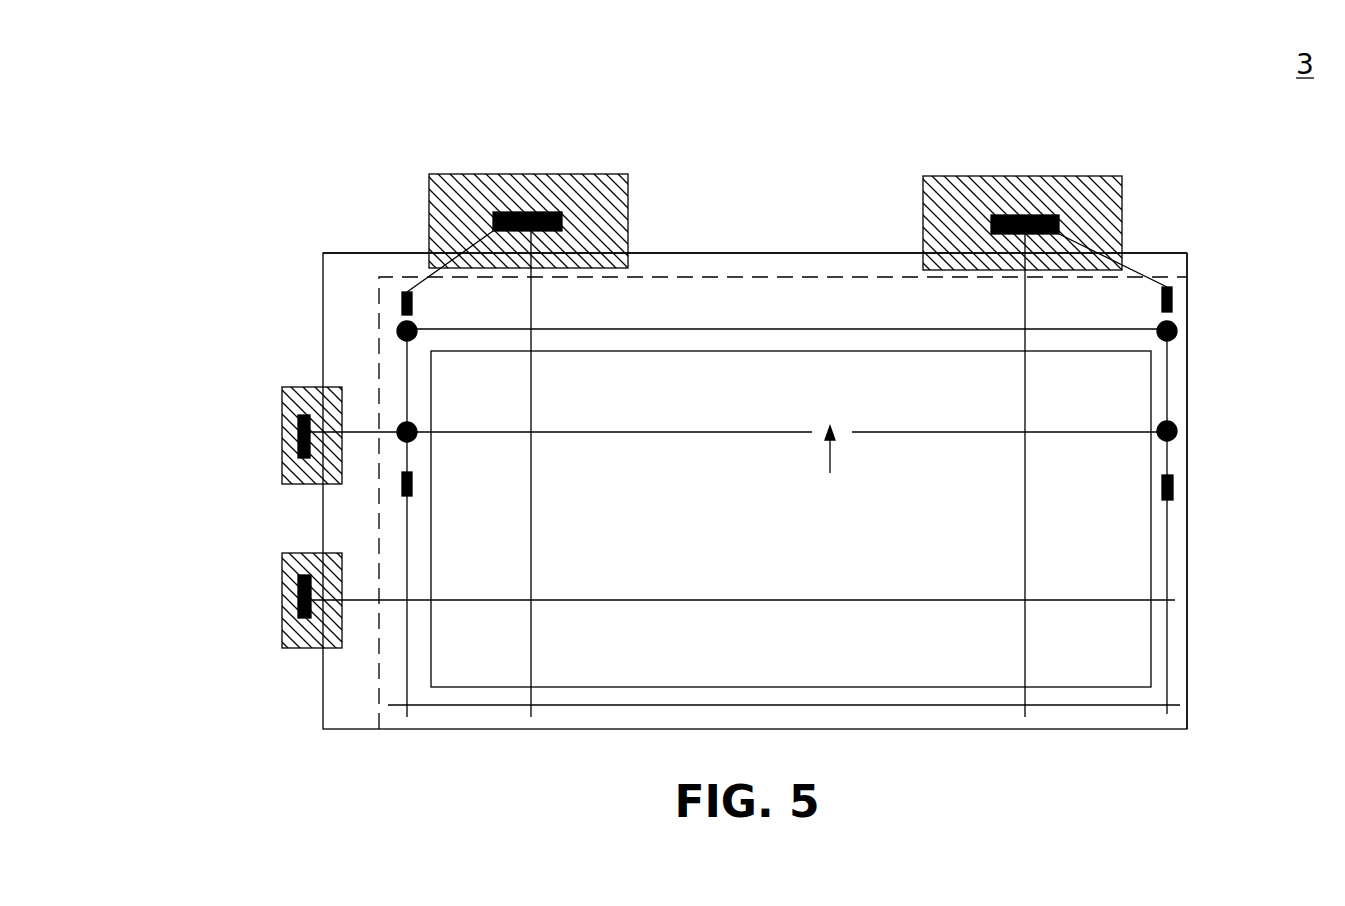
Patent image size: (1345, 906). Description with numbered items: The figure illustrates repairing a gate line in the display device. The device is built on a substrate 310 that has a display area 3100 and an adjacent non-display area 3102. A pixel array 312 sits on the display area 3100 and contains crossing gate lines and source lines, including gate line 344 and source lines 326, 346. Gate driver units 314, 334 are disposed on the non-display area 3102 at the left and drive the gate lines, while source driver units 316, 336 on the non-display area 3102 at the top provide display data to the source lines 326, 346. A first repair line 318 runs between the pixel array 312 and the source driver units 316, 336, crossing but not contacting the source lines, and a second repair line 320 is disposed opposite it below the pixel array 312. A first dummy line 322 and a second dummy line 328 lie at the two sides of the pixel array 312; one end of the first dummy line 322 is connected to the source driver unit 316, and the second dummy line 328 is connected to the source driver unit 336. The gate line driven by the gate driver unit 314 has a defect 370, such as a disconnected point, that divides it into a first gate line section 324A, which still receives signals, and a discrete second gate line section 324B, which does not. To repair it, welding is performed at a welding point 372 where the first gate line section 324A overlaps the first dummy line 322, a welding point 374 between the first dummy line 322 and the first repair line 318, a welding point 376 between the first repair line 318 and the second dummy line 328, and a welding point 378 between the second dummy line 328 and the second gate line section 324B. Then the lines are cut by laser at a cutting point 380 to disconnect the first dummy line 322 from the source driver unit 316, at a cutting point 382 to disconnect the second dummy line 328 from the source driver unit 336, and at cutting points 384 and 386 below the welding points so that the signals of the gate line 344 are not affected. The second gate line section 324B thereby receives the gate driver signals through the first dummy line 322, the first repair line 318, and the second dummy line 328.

The substrate 310 is at (1168, 253).
The pixel array 312 is at (1151, 395).
The gate driver unit 314 is at (283, 433).
The source driver unit 316 is at (522, 192).
The first repair line 318 is at (688, 328).
The second repair line 320 is at (868, 706).
The first dummy line 322 is at (380, 362).
The first gate line section 324A is at (727, 433).
The second gate line section 324B is at (950, 433).
The source line 326 is at (536, 467).
The second dummy line 328 is at (1188, 540).
The gate driver unit 334 is at (283, 601).
The source driver unit 336 is at (1020, 195).
The gate line 344 is at (772, 602).
The source line 346 is at (1030, 528).
The defect 370 is at (830, 471).
The welding point 372 is at (417, 428).
The welding point 374 is at (417, 328).
The welding point 376 is at (1178, 336).
The welding point 378 is at (1178, 430).
The cutting point 380 is at (405, 292).
The cutting point 382 is at (1173, 300).
The cutting point 384 is at (1175, 490).
The cutting point 386 is at (416, 487).
The display area 3100 is at (826, 320).
The non-display area 3102 is at (770, 265).